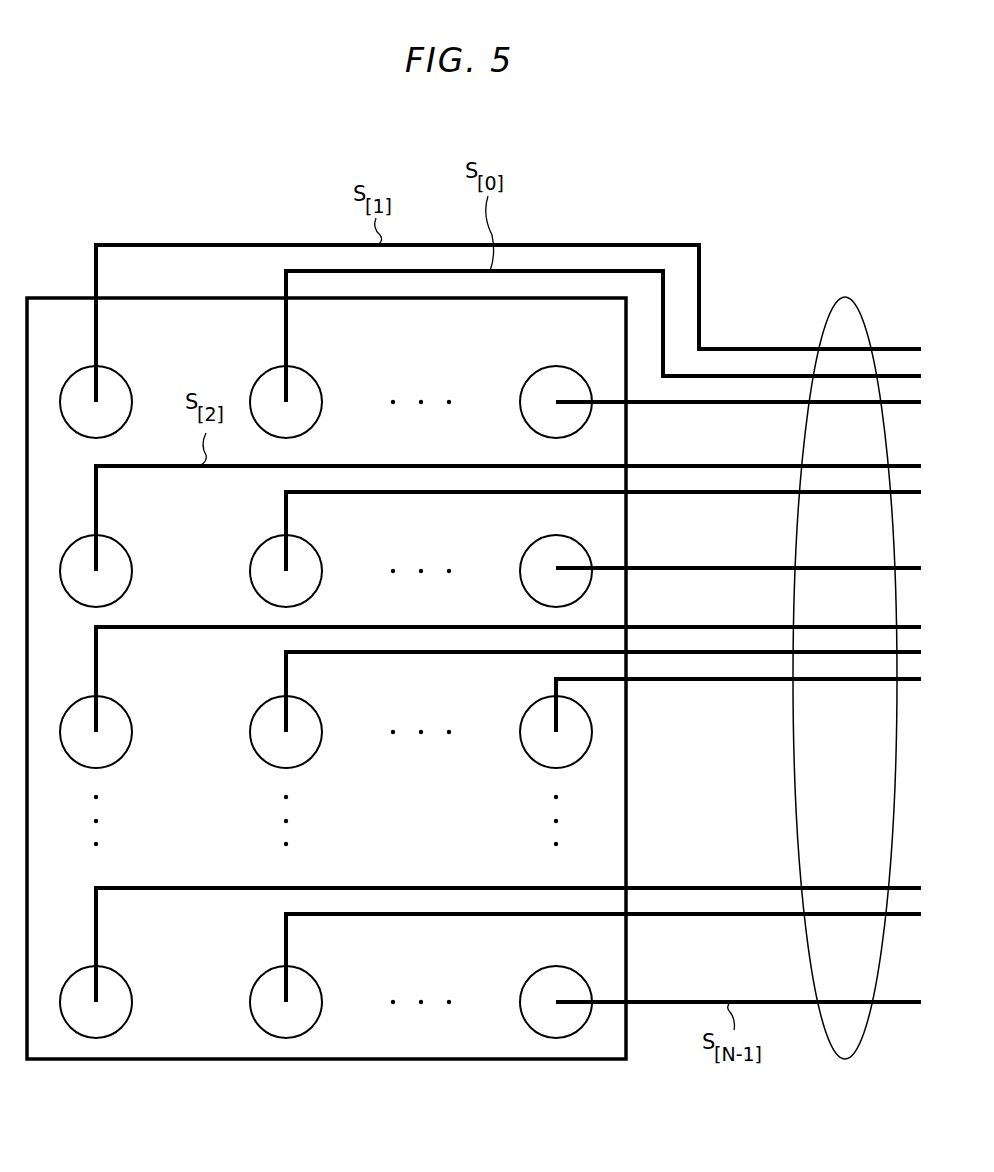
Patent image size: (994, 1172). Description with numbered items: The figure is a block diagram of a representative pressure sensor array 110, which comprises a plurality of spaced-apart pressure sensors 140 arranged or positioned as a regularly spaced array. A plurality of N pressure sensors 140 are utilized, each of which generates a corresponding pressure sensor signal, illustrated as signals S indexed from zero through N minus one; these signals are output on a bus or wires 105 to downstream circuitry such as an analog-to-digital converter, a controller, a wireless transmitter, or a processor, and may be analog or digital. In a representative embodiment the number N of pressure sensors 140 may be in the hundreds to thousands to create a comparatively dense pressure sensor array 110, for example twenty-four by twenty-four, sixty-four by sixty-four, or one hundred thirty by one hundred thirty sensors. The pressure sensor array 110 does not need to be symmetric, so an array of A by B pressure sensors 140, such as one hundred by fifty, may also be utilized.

The bus or wires 105 is at (843, 298).
The pressure sensor array 110 is at (386, 1060).
The pressure sensor 140 is at (326, 732).